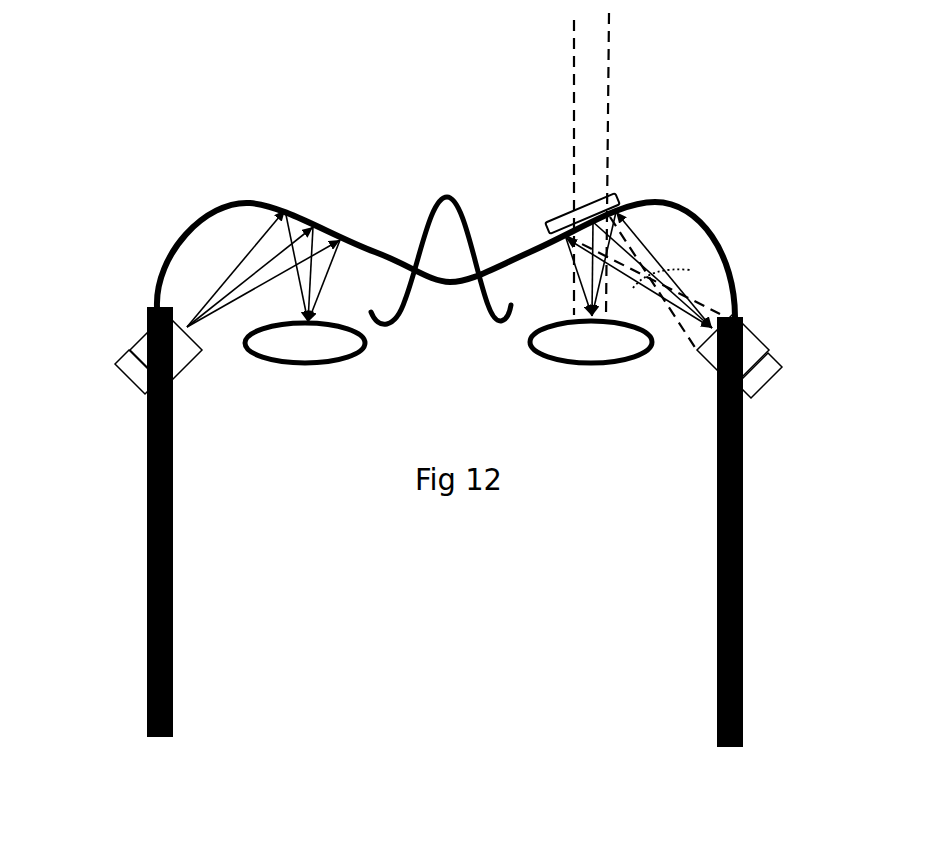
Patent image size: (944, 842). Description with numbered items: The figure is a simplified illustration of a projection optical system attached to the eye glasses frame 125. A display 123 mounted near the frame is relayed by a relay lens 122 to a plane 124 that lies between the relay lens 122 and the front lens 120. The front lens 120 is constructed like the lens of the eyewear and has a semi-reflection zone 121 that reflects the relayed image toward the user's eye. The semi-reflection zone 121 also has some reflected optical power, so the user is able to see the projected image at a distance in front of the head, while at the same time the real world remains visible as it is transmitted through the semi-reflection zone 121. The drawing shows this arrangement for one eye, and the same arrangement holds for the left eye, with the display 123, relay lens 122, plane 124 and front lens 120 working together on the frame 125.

The front lens 120 is at (657, 200).
The semi-reflection zone 121 is at (573, 195).
The relay lens 122 is at (135, 343).
The display 123 is at (145, 395).
The plane 124 is at (690, 269).
The eye glasses frame 125 is at (717, 518).